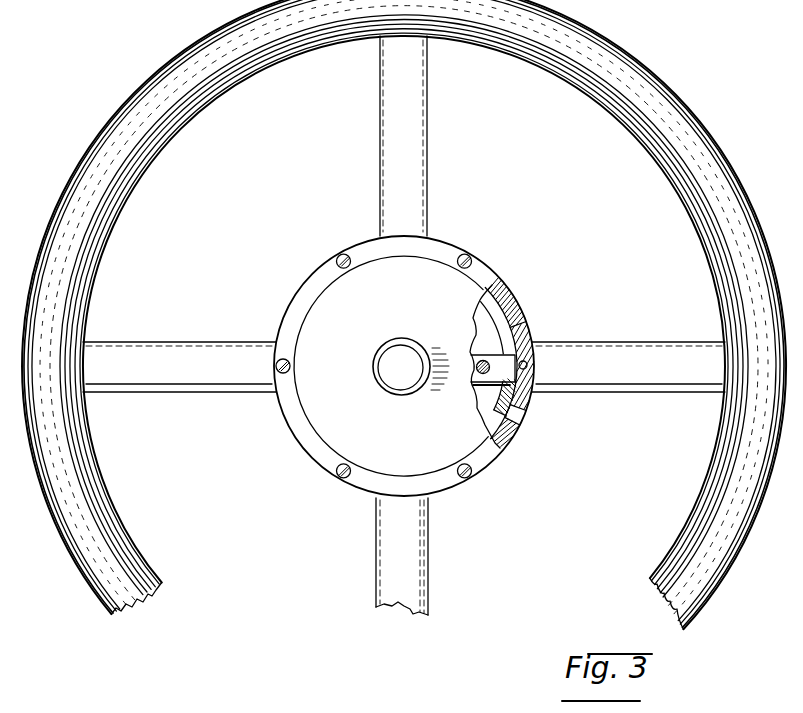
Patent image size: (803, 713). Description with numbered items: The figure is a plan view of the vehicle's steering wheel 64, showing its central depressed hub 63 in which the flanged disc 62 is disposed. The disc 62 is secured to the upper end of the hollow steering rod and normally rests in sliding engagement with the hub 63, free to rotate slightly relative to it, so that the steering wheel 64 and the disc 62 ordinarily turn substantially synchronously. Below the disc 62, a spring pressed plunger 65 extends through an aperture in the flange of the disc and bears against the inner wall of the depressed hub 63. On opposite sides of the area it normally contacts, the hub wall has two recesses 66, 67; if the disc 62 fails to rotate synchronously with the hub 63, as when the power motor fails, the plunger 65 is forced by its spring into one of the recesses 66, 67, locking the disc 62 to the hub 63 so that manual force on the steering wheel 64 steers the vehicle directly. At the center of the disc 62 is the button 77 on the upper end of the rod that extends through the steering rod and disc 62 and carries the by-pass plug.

The flanged disc 62 is at (404, 366).
The depressed hub 63 is at (510, 443).
The steering wheel 64 is at (717, 452).
The spring pressed plunger 65 is at (502, 363).
The recess 66 is at (515, 313).
The recess 67 is at (515, 422).
The button 77 is at (398, 373).